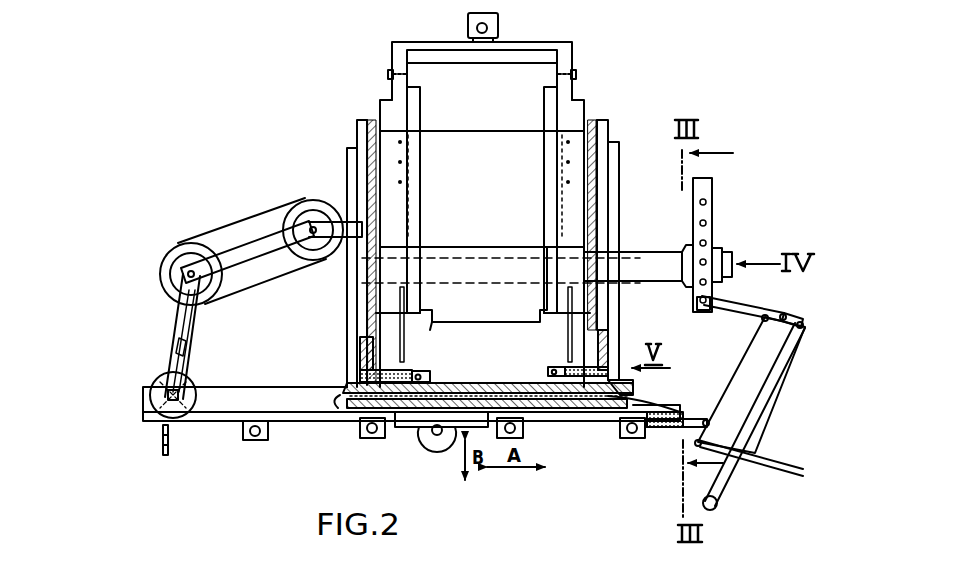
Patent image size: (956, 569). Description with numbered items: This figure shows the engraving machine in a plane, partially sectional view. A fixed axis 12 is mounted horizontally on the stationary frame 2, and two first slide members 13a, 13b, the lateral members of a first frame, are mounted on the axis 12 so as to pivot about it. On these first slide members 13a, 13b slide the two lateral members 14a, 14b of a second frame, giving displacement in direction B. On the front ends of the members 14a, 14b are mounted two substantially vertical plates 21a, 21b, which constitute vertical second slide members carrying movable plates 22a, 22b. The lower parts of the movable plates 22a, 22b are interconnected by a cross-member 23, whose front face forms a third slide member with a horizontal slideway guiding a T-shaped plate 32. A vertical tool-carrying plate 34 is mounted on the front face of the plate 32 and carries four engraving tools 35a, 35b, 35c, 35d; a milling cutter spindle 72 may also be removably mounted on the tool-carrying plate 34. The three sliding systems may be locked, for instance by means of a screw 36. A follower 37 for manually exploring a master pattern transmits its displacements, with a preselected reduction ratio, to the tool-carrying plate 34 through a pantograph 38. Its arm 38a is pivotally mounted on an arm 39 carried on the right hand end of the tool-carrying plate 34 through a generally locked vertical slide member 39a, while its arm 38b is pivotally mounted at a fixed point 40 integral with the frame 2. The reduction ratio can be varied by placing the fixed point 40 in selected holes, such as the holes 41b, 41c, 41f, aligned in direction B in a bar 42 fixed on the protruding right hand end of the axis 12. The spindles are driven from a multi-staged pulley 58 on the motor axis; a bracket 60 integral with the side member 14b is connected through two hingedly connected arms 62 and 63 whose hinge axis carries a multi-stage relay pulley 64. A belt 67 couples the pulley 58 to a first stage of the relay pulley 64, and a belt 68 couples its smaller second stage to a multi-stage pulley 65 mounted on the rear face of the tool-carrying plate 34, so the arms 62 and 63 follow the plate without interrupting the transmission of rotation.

The frame 2 is at (496, 345).
The fixed axis 12 is at (642, 268).
The first slide member 13a is at (620, 146).
The first slide member 13b is at (347, 148).
The lateral member of second frame 14a is at (611, 320).
The lateral member of second frame 14b is at (349, 302).
The vertical plate 21a is at (571, 365).
The vertical plate 21b is at (361, 356).
The movable plate 22a is at (630, 384).
The movable plate 22b is at (360, 376).
The cross-member 23 is at (460, 383).
The T-shaped plate 32 is at (500, 383).
The tool-carrying plate 34 is at (590, 420).
The engraving tool 35a is at (255, 441).
The engraving tool 35b is at (385, 440).
The engraving tool 35c is at (525, 430).
The engraving tool 35d is at (642, 438).
The screw 36 is at (346, 412).
The follower 37 is at (718, 506).
The pantograph 38 is at (772, 390).
The arm of pantograph 38a is at (735, 385).
The arm of pantograph 38b is at (786, 314).
The arm 39 is at (696, 418).
The vertical slide member 39a is at (663, 428).
The fixed point 40 is at (694, 300).
The hole 41b is at (722, 283).
The hole 41c is at (714, 258).
The hole 41f is at (712, 204).
The bar 42 is at (692, 190).
The multi-staged pulley 58 is at (311, 203).
The bracket 60 is at (343, 232).
The arm 62 is at (271, 244).
The arm 63 is at (176, 318).
The multi-stage relay pulley 64 is at (182, 247).
The multi-stage pulley 65 is at (150, 396).
The belt 67 is at (247, 218).
The belt 68 is at (163, 352).
The milling cutter spindle 72 is at (445, 448).